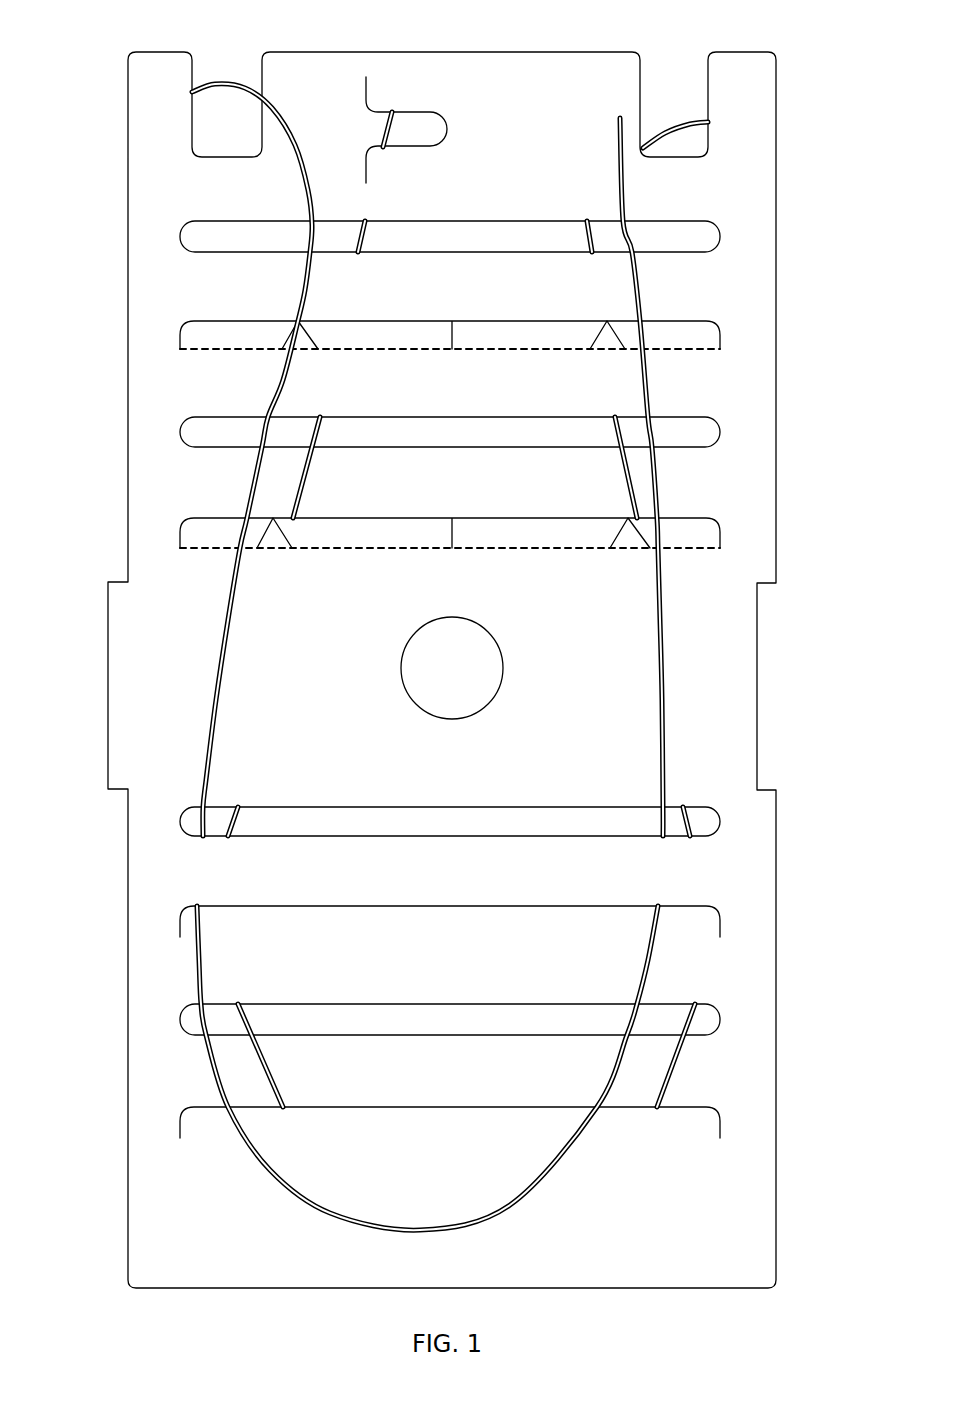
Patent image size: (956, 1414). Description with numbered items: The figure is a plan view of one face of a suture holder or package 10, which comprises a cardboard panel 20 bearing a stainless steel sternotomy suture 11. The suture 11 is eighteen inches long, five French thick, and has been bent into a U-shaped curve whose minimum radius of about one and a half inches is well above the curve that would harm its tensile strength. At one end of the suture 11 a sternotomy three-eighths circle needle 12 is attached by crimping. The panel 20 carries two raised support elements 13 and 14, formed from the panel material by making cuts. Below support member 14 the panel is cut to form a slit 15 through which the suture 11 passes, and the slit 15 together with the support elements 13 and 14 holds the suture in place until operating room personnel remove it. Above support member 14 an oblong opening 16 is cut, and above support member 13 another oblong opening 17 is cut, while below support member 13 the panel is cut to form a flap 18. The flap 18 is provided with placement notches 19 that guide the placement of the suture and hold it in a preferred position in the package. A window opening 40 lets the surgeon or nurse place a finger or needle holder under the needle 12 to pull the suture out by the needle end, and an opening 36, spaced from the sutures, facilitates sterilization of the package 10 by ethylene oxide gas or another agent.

The suture holder or package 10 is at (454, 644).
The stainless steel sternotomy suture 11 is at (660, 580).
The sternotomy needle 12 is at (263, 100).
The raised support element 13 is at (627, 288).
The raised support element 14 is at (675, 884).
The slit 15 is at (722, 936).
The oblong opening 16 is at (720, 830).
The oblong opening 17 is at (673, 220).
The flap 18 is at (722, 332).
The placement notches 19 is at (298, 320).
The cardboard panel 20 is at (718, 740).
The opening 36 is at (503, 662).
The window opening 40 is at (218, 160).